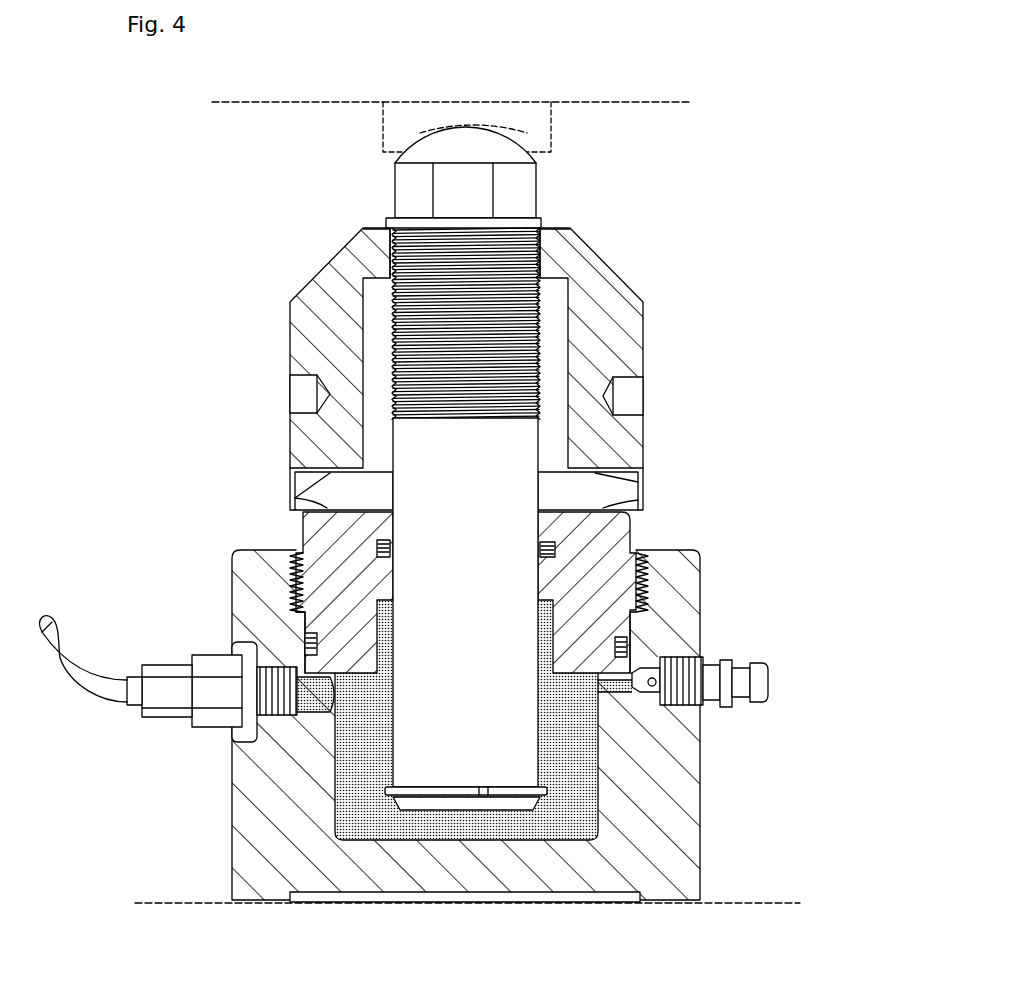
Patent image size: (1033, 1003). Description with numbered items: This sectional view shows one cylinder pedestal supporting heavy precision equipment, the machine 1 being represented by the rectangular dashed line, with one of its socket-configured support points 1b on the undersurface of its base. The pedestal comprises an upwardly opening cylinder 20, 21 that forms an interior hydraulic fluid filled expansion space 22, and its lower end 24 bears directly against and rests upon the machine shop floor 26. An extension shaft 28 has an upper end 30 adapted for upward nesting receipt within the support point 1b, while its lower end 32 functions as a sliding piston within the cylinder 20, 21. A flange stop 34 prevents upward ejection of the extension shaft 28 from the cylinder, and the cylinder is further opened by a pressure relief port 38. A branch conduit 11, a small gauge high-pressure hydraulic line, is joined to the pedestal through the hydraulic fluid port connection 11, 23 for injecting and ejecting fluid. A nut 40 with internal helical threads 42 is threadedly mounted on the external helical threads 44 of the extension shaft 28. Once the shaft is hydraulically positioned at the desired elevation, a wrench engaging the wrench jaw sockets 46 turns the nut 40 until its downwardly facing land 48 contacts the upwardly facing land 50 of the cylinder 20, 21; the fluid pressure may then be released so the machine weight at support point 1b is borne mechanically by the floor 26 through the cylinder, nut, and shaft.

The machine 1 is at (457, 80).
The support point 1b is at (551, 128).
The branch conduit 11 is at (77, 678).
The cylinder 20 is at (248, 598).
The cylinder 21 is at (702, 568).
The hydraulic fluid filled expansion space 22 is at (577, 752).
The hydraulic fluid port connection 23 is at (313, 698).
The lower end 24 is at (650, 893).
The machine shop floor 26 is at (486, 935).
The extension shaft 28 is at (402, 185).
The upper end 30 is at (422, 156).
The lower end 32 is at (418, 748).
The flange stop 34 is at (545, 795).
The pressure relief port 38 is at (683, 660).
The nut 40 is at (328, 285).
The internal helical threads 42 is at (387, 258).
The external helical threads 44 is at (540, 350).
The wrench jaw sockets 46 is at (298, 389).
The downwardly facing land 48 is at (293, 497).
The upwardly facing land 50 is at (290, 505).